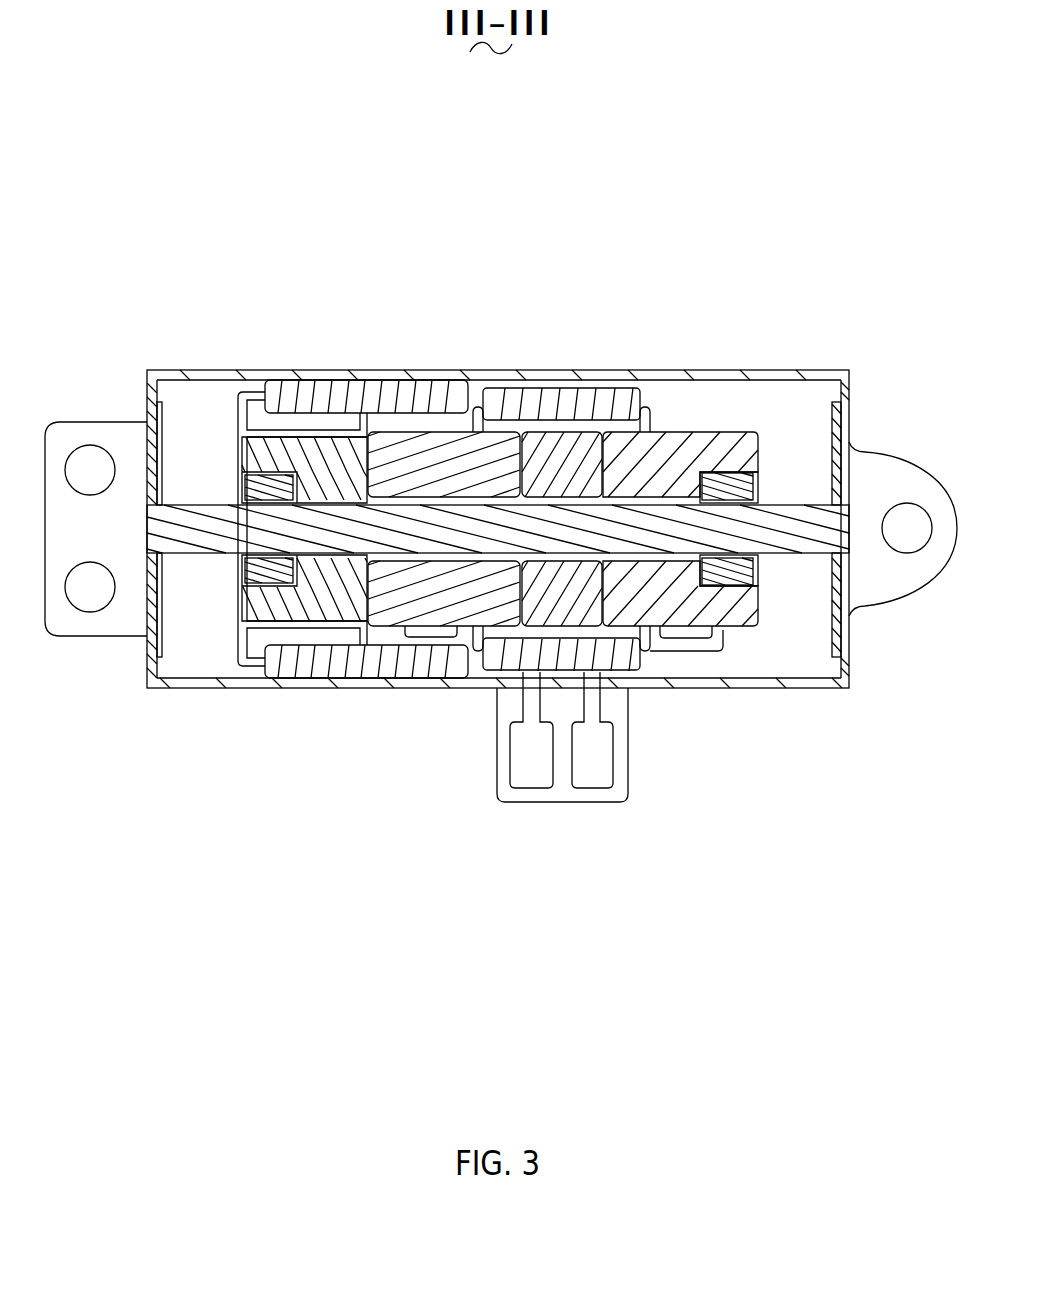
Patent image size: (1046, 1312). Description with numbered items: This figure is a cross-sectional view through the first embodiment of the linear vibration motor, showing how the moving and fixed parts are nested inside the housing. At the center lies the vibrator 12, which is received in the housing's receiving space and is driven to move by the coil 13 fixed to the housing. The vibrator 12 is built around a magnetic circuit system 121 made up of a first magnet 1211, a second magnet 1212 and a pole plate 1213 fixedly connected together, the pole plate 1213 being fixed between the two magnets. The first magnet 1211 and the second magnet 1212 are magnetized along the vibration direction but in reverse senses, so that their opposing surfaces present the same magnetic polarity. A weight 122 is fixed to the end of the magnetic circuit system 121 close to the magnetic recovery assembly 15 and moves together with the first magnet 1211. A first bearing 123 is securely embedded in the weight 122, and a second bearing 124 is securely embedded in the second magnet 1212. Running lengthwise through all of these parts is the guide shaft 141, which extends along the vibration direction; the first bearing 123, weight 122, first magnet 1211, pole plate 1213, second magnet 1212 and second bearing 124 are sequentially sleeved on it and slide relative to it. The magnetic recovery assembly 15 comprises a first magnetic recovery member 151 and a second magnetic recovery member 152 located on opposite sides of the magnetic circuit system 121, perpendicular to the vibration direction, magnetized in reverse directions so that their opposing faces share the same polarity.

The vibrator 12 is at (515, 732).
The magnetic circuit system 121 is at (563, 691).
The first magnet 1211 is at (440, 600).
The second magnet 1212 is at (645, 603).
The pole plate 1213 is at (557, 583).
The weight 122 is at (352, 597).
The first bearing 123 is at (289, 582).
The second bearing 124 is at (744, 711).
The coil 13 is at (628, 400).
The guide shaft 141 is at (783, 528).
The magnetic recovery assembly 15 is at (295, 440).
The first magnetic recovery member 151 is at (277, 392).
The second magnetic recovery member 152 is at (270, 655).